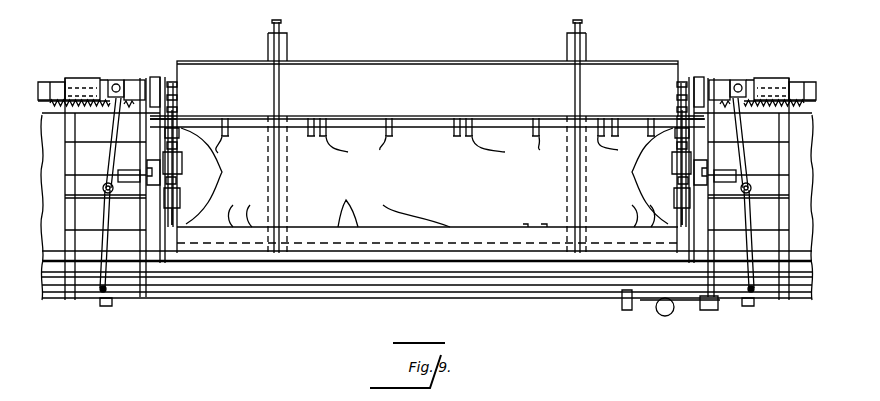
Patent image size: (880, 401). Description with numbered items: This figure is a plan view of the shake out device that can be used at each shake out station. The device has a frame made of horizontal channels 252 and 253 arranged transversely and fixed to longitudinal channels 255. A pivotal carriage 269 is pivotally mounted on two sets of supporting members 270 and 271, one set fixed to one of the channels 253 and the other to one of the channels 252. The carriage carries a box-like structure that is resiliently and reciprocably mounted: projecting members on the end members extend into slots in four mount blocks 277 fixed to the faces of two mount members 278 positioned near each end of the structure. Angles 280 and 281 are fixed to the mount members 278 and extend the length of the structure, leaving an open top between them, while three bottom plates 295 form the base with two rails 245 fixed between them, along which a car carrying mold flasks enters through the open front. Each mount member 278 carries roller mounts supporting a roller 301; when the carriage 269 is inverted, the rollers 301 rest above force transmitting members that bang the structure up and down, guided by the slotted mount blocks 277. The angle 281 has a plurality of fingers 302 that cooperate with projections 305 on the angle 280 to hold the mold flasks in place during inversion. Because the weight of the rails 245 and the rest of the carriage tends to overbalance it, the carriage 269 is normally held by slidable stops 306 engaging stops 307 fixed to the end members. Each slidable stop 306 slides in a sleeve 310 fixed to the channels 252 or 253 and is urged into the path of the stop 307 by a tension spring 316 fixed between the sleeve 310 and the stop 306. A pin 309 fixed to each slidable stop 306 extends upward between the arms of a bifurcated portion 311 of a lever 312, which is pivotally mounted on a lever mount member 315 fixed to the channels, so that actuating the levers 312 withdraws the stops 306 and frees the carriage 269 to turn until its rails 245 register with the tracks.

The rails 245 is at (282, 25).
The horizontal channels 252 is at (140, 117).
The horizontal channels 253 is at (727, 115).
The longitudinal channels 255 is at (97, 113).
The pivotal carriage 269 is at (405, 52).
The supporting members 270 is at (712, 157).
The supporting members 271 is at (142, 160).
The mount blocks 277 is at (427, 167).
The mount members 278 is at (427, 176).
The angle 280 is at (487, 227).
The angle 281 is at (432, 130).
The bottom plates 295 is at (225, 68).
The roller 301 is at (208, 194).
The fingers 302 is at (625, 147).
The projections 305 is at (636, 226).
The slidable stop 306 is at (56, 82).
The stop 307 is at (158, 77).
The pin 309 is at (116, 80).
The sleeve 310 is at (86, 78).
The bifurcated portion 311 is at (130, 80).
The lever 312 is at (108, 222).
The lever mount member 315 is at (88, 186).
The tension spring 316 is at (66, 112).